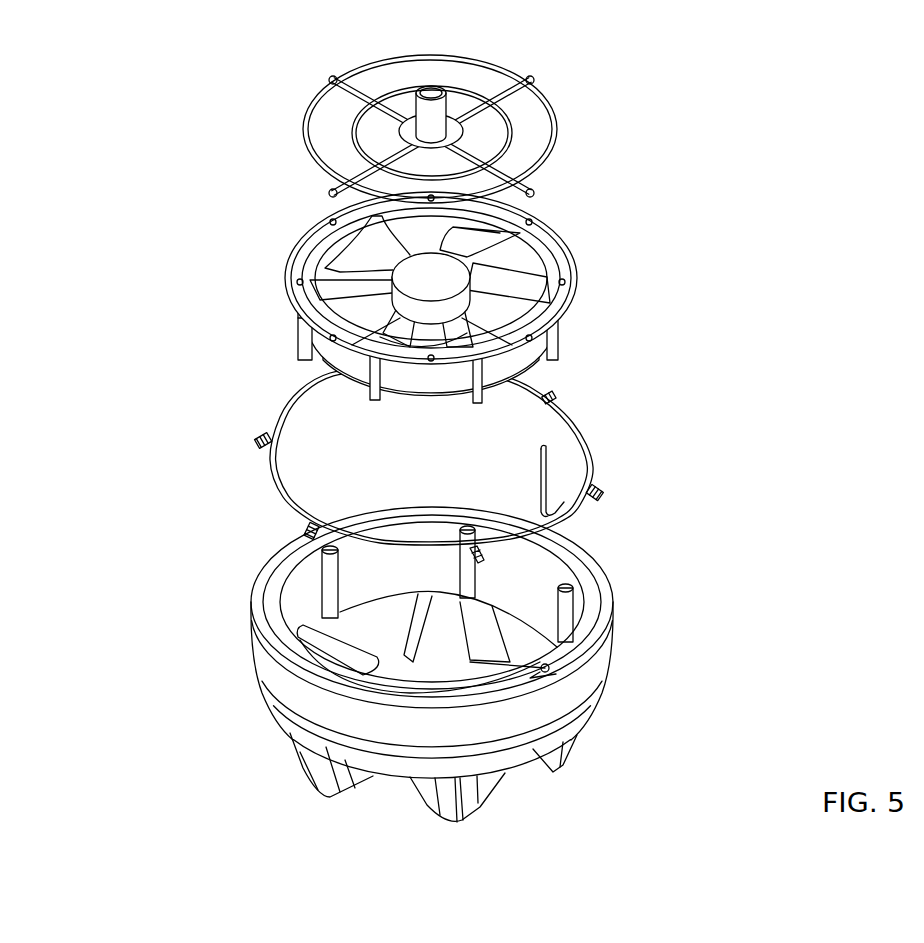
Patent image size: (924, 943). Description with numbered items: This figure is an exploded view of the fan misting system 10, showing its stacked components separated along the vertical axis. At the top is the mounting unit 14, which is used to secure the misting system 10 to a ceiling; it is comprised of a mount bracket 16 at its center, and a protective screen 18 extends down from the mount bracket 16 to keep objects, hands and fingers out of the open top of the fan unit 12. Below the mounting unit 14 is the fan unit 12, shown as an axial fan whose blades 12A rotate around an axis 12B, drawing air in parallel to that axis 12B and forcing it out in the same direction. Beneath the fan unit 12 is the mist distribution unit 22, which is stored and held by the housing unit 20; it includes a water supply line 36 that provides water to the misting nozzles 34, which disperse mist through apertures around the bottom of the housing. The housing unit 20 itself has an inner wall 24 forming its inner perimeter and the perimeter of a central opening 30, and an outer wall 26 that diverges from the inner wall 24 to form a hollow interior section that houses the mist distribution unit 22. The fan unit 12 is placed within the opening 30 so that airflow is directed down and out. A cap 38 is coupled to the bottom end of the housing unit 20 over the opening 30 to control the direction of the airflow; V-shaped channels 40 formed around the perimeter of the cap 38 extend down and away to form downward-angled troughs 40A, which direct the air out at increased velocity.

The fan misting system 10 is at (186, 152).
The fan unit 12 is at (574, 262).
The blades 12A is at (378, 237).
The axis 12B is at (425, 277).
The mounting unit 14 is at (568, 111).
The mount bracket 16 is at (445, 108).
The screen 18 is at (556, 155).
The housing unit 20 is at (630, 611).
The mist distribution unit 22 is at (602, 414).
The inner wall 24 is at (530, 568).
The outer wall 26 is at (262, 636).
The opening 30 is at (370, 600).
The misting nozzle 34 is at (606, 497).
The water supply line 36 is at (297, 405).
The cap 38 is at (427, 642).
The channels 40 is at (306, 790).
The trough 40A is at (467, 793).